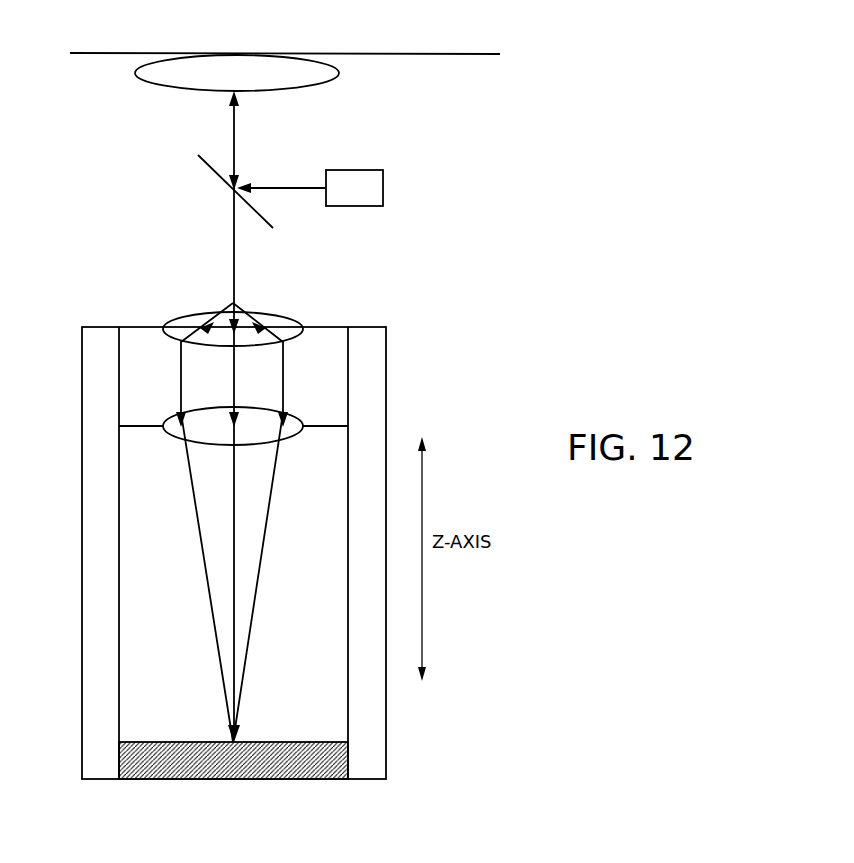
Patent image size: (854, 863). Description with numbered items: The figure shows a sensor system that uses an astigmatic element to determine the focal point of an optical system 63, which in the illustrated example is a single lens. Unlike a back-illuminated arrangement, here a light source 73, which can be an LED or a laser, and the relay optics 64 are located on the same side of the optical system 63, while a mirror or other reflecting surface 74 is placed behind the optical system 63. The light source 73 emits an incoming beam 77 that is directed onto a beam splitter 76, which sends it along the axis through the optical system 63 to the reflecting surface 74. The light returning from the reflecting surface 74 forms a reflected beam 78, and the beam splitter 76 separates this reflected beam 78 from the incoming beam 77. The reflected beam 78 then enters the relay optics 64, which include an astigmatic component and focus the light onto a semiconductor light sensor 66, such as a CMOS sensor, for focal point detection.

The reflecting surface 74 is at (465, 52).
The optical system 63 is at (350, 74).
The beam splitter 76 is at (208, 168).
The incoming beam 77 is at (283, 187).
The light source 73 is at (354, 188).
The reflected beam 78 is at (236, 272).
The relay optics 64 is at (355, 375).
The semiconductor light sensor 66 is at (355, 759).